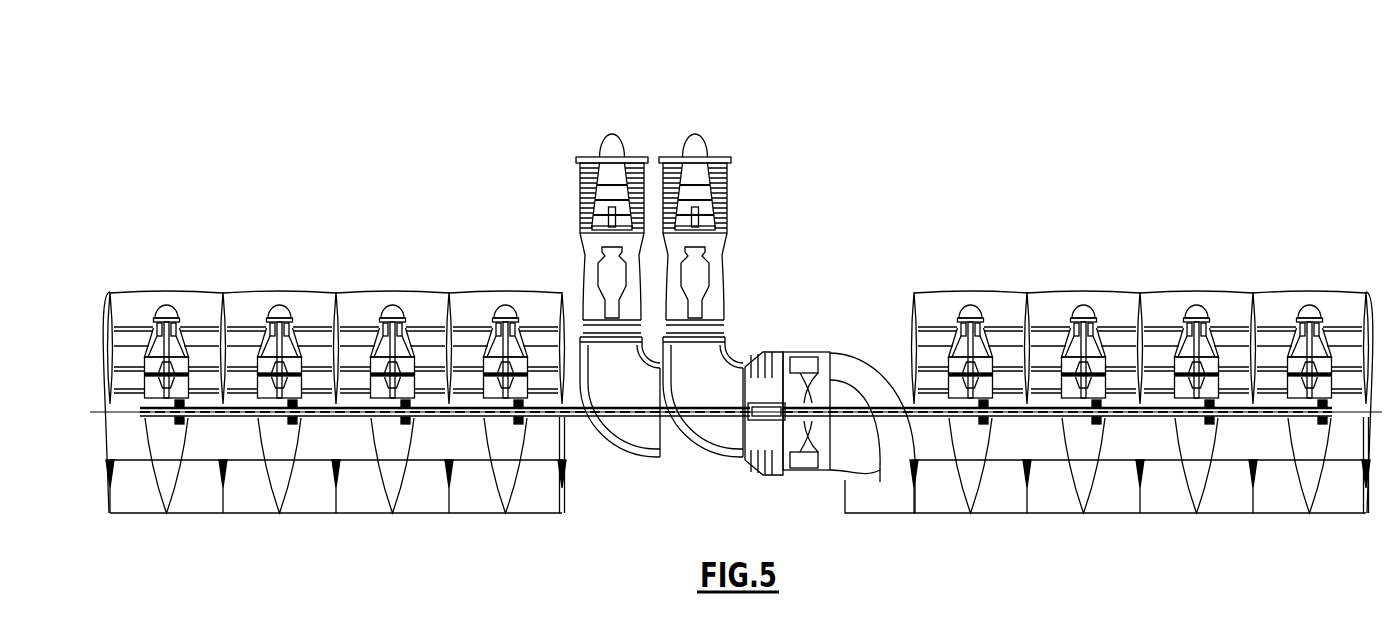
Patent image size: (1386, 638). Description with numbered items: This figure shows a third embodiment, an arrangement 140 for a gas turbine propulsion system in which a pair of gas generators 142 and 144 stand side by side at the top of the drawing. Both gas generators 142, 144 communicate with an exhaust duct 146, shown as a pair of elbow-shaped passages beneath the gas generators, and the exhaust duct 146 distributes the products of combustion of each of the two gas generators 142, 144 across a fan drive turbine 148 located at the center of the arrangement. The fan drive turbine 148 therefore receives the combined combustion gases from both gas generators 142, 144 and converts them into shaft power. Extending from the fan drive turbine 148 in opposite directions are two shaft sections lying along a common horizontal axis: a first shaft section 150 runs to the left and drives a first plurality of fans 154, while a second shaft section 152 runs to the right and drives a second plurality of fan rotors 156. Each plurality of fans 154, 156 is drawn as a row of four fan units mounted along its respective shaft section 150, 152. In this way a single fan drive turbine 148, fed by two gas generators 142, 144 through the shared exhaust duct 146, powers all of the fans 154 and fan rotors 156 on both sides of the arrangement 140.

The arrangement 140 is at (759, 105).
The gas generator 142 is at (745, 187).
The gas generator 144 is at (634, 128).
The exhaust duct 146 is at (633, 437).
The fan drive turbine 148 is at (770, 350).
The first shaft section 150 is at (563, 417).
The second shaft section 152 is at (950, 419).
The first plurality of fans 154 is at (255, 298).
The second plurality of fan rotors 156 is at (1067, 278).